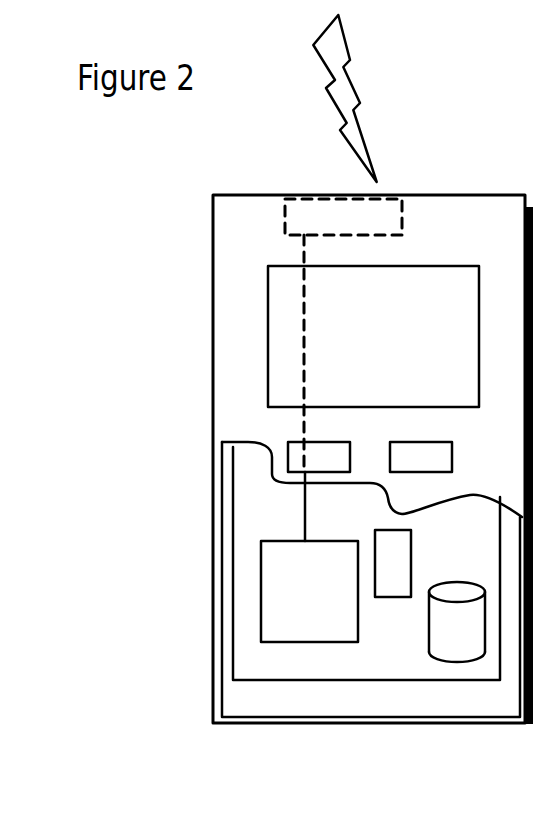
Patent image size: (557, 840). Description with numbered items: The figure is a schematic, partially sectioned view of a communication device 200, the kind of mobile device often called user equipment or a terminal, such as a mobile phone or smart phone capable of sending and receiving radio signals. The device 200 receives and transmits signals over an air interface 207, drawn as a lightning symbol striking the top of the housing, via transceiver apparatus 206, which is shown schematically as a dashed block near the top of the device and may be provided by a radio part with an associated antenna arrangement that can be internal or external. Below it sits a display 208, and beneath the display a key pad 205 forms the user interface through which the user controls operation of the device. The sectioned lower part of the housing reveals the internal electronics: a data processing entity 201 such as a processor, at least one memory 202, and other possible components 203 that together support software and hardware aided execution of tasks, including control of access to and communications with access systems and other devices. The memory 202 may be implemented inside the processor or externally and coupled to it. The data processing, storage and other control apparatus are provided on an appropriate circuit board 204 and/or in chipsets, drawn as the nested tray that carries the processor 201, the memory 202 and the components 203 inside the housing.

The communication device 200 is at (216, 241).
The data processing entity 201 is at (268, 574).
The memory 202 is at (450, 633).
The other possible components 203 is at (393, 547).
The circuit board 204 is at (260, 660).
The key pad 205 is at (292, 457).
The transceiver apparatus 206 is at (390, 212).
The air interface 207 is at (375, 130).
The display 208 is at (285, 322).